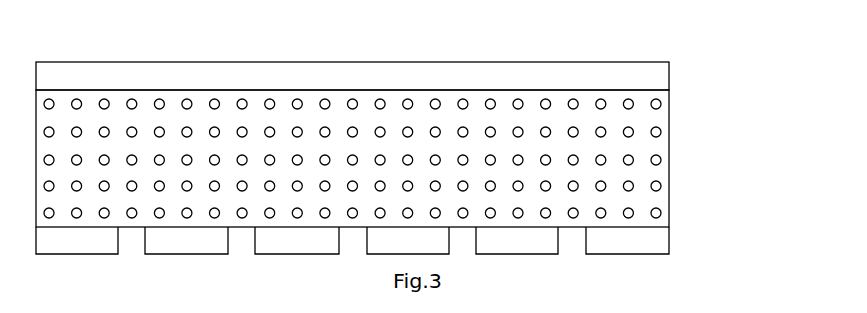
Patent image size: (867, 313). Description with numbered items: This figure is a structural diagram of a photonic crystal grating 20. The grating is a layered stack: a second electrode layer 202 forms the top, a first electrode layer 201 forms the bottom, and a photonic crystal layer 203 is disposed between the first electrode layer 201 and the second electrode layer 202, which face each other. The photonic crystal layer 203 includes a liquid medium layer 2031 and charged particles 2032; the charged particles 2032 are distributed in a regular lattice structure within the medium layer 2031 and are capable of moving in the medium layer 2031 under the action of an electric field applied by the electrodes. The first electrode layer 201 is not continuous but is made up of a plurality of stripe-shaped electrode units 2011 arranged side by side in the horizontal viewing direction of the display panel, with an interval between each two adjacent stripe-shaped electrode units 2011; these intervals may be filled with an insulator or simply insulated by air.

The photonic crystal grating 20 is at (42, 32).
The second electrode layer 202 is at (633, 76).
The photonic crystal layer 203 is at (421, 158).
The liquid medium layer 2031 is at (633, 147).
The charged particles 2032 is at (657, 161).
The first electrode layer 201 is at (423, 240).
The stripe-shaped electrode units 2011 is at (633, 242).